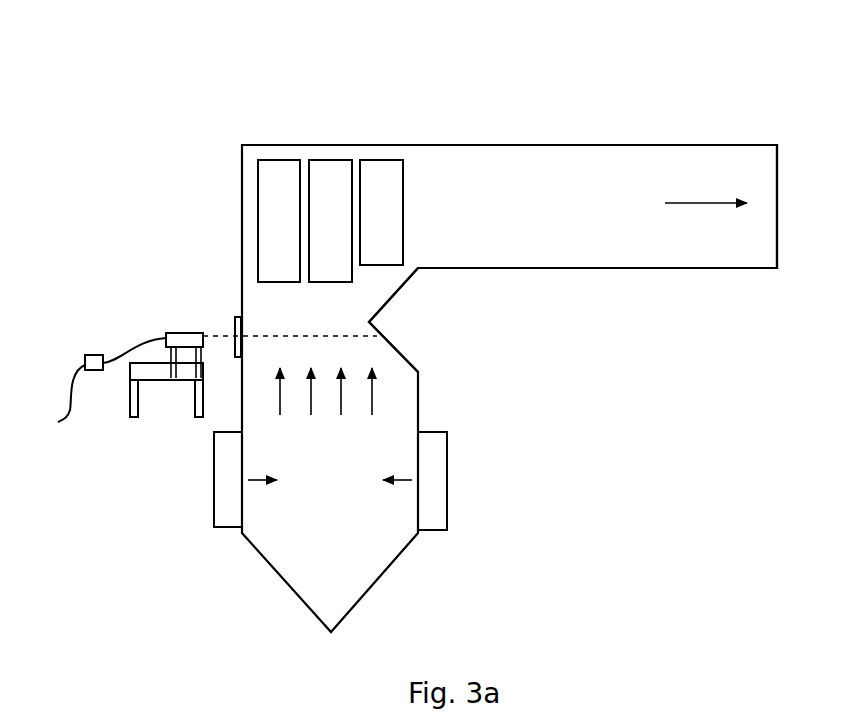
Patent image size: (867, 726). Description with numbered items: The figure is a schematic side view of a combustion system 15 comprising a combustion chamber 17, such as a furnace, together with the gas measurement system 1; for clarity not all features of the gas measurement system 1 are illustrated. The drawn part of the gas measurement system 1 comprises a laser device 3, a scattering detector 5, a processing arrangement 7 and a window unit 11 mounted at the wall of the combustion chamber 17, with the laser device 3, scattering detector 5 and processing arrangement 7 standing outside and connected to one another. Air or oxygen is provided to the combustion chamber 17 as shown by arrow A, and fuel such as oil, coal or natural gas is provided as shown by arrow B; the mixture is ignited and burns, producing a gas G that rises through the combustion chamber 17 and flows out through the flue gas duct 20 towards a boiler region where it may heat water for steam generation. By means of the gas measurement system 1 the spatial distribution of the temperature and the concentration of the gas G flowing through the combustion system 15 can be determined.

The gas measurement system 1 is at (117, 344).
The laser device 3 is at (155, 375).
The scattering detector 5 is at (182, 332).
The processing arrangement 7 is at (72, 395).
The window unit 11 is at (238, 312).
The combustion system 15 is at (667, 72).
The combustion chamber 17 is at (400, 353).
The flue gas duct 20 is at (552, 155).